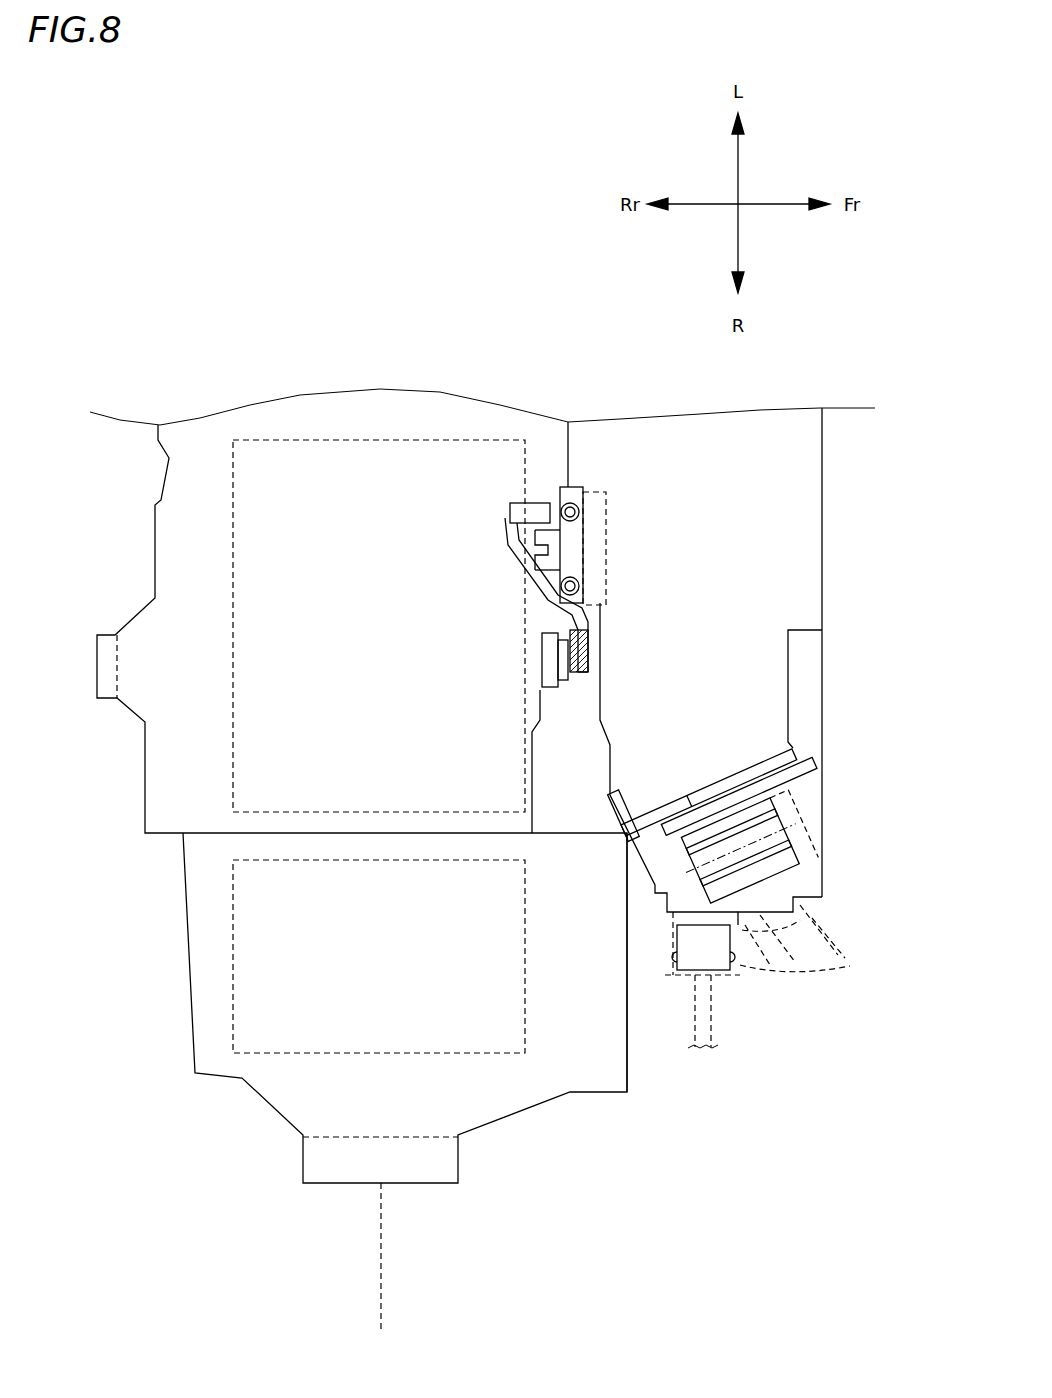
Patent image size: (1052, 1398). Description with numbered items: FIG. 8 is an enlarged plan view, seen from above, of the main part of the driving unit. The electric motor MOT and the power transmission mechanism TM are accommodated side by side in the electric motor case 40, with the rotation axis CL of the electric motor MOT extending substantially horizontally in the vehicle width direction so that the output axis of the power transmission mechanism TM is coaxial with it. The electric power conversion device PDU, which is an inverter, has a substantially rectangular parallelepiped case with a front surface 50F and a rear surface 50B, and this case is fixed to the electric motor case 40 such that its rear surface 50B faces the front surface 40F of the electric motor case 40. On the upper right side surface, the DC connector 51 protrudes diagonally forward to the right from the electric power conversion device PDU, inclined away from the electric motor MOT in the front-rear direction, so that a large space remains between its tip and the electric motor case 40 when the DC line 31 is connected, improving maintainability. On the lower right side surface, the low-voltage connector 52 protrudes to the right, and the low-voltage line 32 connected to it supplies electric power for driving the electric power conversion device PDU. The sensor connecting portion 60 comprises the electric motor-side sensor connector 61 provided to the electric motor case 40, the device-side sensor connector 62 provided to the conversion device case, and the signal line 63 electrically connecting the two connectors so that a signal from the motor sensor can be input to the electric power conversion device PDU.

The electric motor case 40 is at (135, 650).
The front surface of the electric motor case 40F is at (626, 978).
The rear surface of the electric power conversion device case 50B is at (566, 452).
The front surface of the electric power conversion device case 50F is at (825, 636).
The DC connector 51 is at (797, 857).
The low-voltage connector 52 is at (735, 972).
The DC line 31 is at (835, 967).
The low-voltage line 32 is at (712, 1025).
The sensor connecting portion 60 is at (565, 641).
The electric motor-side sensor connector 61 is at (560, 692).
The device-side sensor connector 62 is at (575, 553).
The signal line 63 is at (517, 572).
The electric motor MOT is at (245, 515).
The power transmission mechanism TM is at (250, 970).
The electric power conversion device PDU is at (795, 475).
The rotation axis CL is at (385, 1282).